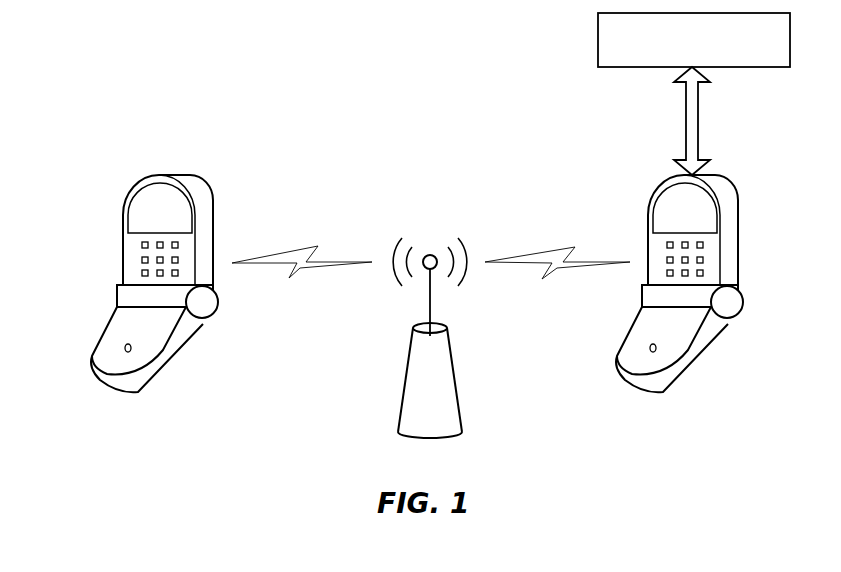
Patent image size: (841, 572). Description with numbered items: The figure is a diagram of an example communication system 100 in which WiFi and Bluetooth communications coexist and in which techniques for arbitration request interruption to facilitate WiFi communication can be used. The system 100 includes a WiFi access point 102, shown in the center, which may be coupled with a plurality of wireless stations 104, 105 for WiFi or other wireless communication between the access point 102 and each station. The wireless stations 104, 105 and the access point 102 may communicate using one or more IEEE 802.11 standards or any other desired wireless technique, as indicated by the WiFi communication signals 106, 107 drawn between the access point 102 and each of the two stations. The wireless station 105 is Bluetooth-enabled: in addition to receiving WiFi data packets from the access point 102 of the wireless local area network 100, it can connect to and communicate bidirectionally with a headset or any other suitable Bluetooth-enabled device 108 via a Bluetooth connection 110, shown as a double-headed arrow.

The communication system 100 is at (320, 65).
The WiFi access point 102 is at (401, 401).
The wireless station 104 is at (123, 233).
The wireless station 105 is at (647, 216).
The WiFi communication signal 106 is at (307, 276).
The WiFi communication signal 107 is at (558, 278).
The Bluetooth-enabled device 108 is at (598, 42).
The Bluetooth connection 110 is at (686, 130).